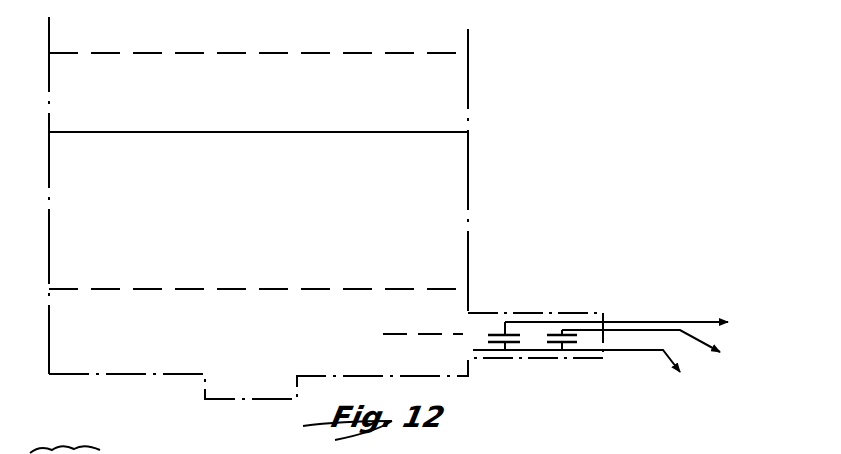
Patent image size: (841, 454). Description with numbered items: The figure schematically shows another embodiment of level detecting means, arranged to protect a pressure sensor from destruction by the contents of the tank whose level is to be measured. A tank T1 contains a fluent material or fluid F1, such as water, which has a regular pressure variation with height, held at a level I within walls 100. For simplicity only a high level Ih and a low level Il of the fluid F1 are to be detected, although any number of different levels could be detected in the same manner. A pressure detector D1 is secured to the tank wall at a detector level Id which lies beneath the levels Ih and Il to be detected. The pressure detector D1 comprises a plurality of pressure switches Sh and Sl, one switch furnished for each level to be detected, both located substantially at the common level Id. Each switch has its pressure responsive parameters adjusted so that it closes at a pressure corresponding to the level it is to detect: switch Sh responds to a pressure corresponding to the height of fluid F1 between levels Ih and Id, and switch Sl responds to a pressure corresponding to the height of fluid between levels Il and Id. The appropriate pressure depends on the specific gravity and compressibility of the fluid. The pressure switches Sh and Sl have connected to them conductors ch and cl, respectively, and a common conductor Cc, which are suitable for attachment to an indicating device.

The walls 100 is at (468, 188).
The tank T1 is at (452, 98).
The fluid F1 is at (264, 225).
The high level Ih is at (219, 52).
The level I is at (217, 130).
The low level Il is at (200, 287).
The detector level Id is at (401, 318).
The pressure detector D1 is at (553, 308).
The pressure switch Sl is at (496, 354).
The pressure switch Sh is at (560, 354).
The conductor cl is at (632, 329).
The conductor ch is at (651, 357).
The common conductor Cc is at (579, 376).